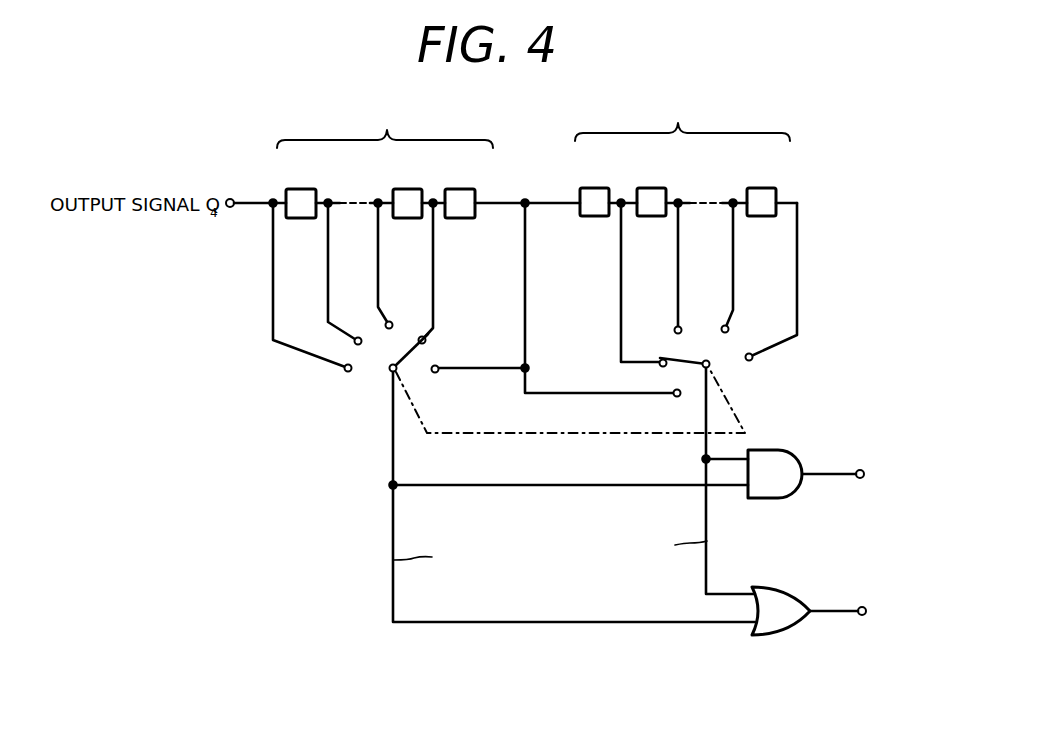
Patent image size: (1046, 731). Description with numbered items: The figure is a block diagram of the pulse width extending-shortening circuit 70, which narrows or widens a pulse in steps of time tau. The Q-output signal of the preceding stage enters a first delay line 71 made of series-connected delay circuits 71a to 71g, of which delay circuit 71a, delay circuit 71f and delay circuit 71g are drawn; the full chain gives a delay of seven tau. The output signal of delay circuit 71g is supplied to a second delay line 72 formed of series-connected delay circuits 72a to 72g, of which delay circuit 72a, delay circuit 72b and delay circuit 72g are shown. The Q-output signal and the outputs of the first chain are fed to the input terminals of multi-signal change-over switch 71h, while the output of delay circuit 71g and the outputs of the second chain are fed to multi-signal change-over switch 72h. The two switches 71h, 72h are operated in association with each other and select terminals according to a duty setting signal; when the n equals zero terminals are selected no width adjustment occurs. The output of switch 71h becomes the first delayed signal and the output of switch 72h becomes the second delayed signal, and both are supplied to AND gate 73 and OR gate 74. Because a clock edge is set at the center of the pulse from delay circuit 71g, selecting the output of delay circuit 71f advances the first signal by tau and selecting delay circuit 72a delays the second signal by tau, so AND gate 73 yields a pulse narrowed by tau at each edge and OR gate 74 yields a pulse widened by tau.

The pulse width extending-shortening circuit 70 is at (538, 658).
The delay circuits 71a to 71g 71 is at (260, 346).
The delay circuit 71a is at (301, 188).
The delay circuit 71f is at (410, 188).
The delay circuit 71g is at (462, 188).
The multi-signal change-over switch 71h is at (390, 371).
The delay circuits 72a to 72g 72 is at (808, 305).
The delay circuit 72a is at (594, 187).
The delay circuit 72b is at (656, 187).
The delay circuit 72g is at (758, 187).
The multi-signal change-over switch 72h is at (712, 366).
The AND gate 73 is at (777, 450).
The OR gate 74 is at (770, 636).